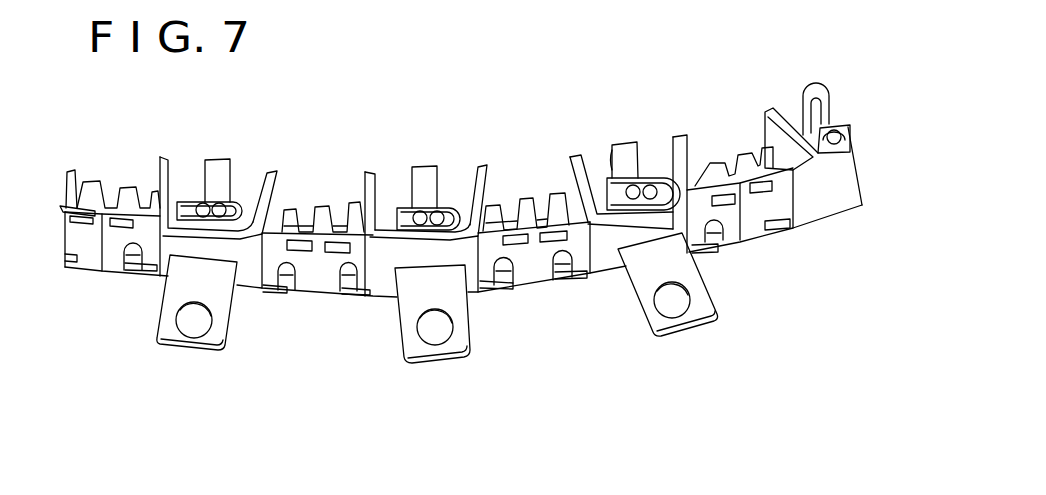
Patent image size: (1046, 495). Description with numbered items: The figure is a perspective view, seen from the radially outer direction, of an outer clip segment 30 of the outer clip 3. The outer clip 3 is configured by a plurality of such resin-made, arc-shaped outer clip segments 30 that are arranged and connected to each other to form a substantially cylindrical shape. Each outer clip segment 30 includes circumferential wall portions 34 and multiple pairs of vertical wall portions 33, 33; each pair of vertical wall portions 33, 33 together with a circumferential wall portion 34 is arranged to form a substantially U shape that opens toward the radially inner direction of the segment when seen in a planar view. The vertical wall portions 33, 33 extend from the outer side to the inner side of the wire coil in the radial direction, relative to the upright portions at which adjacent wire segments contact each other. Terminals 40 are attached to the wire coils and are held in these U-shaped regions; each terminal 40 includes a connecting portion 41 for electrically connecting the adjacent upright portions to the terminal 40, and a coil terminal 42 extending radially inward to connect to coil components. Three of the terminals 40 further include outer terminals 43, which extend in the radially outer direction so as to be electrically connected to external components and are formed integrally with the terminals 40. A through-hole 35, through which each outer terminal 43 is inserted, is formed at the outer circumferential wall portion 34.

The outer clip 3 is at (461, 225).
The outer clip segment 30 is at (460, 248).
The vertical wall portion 33 is at (370, 170).
The circumferential wall portion 34 is at (440, 243).
The through-hole 35 is at (658, 238).
The terminal 40 is at (425, 162).
The connecting portion 41 is at (662, 173).
The coil terminal 42 is at (625, 152).
The outer terminal 43 is at (208, 342).